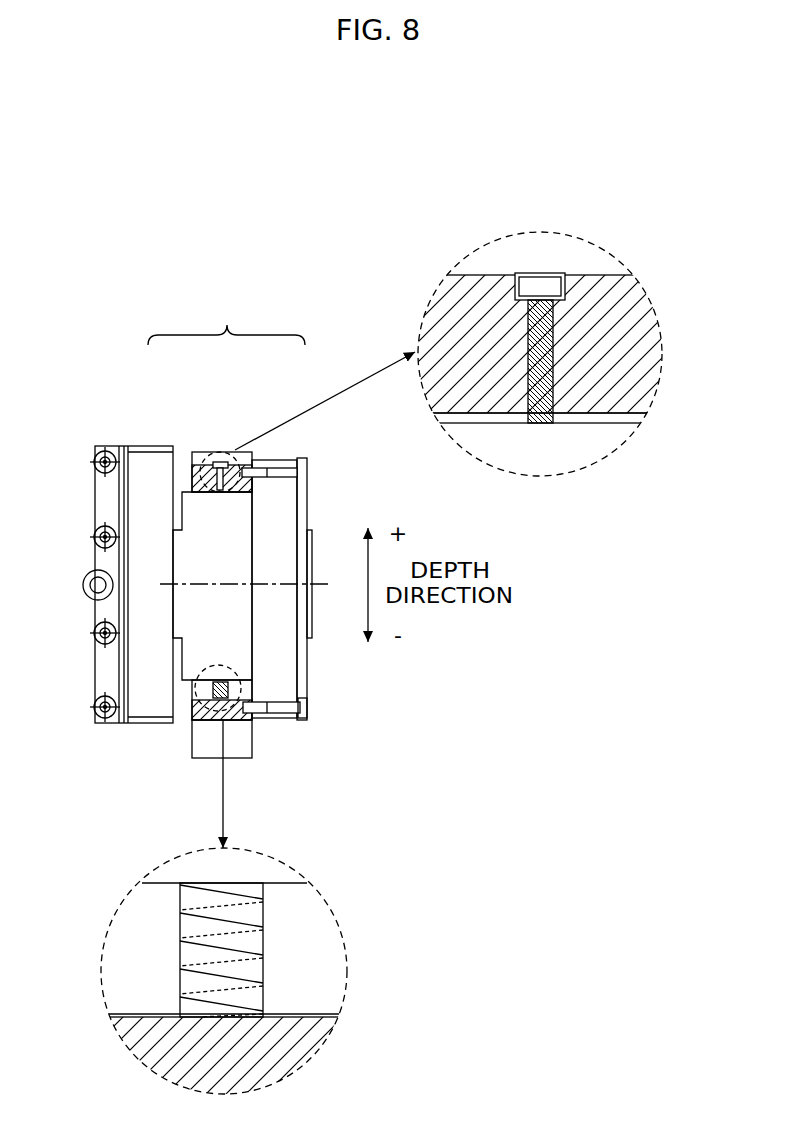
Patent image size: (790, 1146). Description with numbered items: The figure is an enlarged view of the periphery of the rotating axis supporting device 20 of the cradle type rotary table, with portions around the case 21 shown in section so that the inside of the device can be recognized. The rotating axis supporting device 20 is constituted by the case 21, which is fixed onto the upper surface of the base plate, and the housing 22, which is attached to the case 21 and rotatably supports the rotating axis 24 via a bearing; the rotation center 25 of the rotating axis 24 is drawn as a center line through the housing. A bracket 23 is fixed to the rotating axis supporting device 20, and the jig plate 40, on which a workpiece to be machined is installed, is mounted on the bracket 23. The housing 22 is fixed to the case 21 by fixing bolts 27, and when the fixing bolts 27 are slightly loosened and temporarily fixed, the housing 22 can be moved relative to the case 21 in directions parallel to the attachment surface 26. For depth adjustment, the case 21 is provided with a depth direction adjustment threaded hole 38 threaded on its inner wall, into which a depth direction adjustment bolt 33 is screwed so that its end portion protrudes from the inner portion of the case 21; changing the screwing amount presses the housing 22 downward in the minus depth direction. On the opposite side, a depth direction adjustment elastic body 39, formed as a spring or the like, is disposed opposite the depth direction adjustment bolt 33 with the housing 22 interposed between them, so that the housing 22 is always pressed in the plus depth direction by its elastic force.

The rotating axis supporting device 20 is at (226, 317).
The case 21 is at (193, 727).
The housing 22 is at (295, 490).
The bracket 23 is at (146, 486).
The rotating axis 24 is at (308, 530).
The rotation center 25 is at (318, 587).
The attachment surface 26 is at (267, 466).
The fixing bolts 27 is at (308, 700).
The depth direction adjustment bolt 33 is at (220, 453).
The depth direction adjustment threaded hole 38 is at (557, 373).
The depth direction adjustment elastic body 39 is at (212, 703).
The jig plate 40 is at (90, 555).